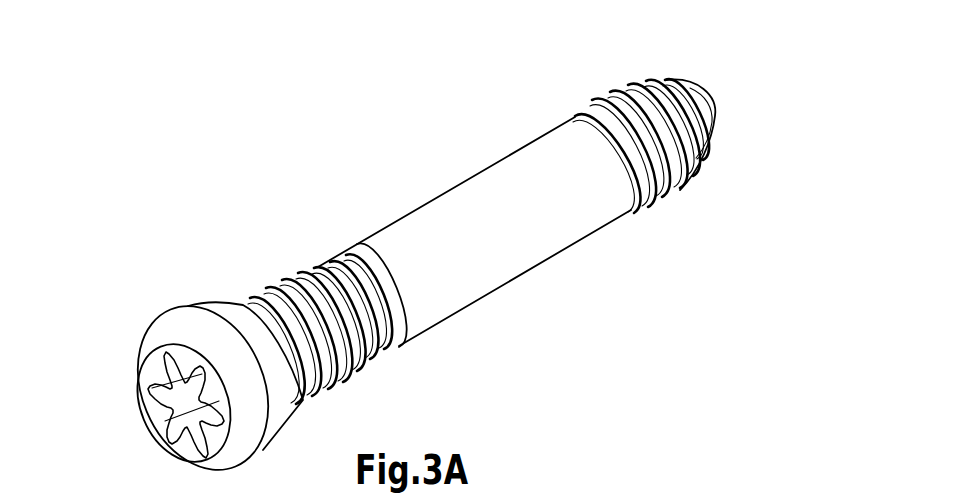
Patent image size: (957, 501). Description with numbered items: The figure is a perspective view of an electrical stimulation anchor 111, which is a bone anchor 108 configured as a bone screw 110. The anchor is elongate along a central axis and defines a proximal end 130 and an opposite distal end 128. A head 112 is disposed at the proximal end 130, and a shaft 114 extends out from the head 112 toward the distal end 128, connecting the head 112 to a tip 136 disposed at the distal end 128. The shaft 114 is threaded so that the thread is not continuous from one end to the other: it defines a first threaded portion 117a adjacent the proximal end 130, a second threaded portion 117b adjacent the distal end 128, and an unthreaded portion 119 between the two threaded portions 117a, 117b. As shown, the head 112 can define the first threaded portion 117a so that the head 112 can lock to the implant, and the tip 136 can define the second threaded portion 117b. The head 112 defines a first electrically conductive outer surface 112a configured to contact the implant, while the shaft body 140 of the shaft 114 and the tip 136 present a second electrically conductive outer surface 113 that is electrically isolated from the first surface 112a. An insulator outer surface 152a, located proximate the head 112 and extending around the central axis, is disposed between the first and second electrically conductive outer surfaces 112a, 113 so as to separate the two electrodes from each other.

The bone anchor 108 is at (443, 253).
The bone screw 110 is at (443, 253).
The electrical stimulation anchor 111 is at (311, 145).
The head 112 is at (209, 289).
The first electrically conductive outer surface 112a is at (273, 278).
The second electrically conductive outer surface 113 is at (443, 228).
The shaft 114 is at (516, 138).
The first threaded portion 117a is at (287, 278).
The second threaded portion 117b is at (622, 85).
The unthreaded portion 119 is at (475, 213).
The distal end 128 is at (715, 123).
The proximal end 130 is at (170, 332).
The tip 136 is at (708, 98).
The shaft body 140 is at (407, 252).
The insulator outer surface 152a is at (366, 258).